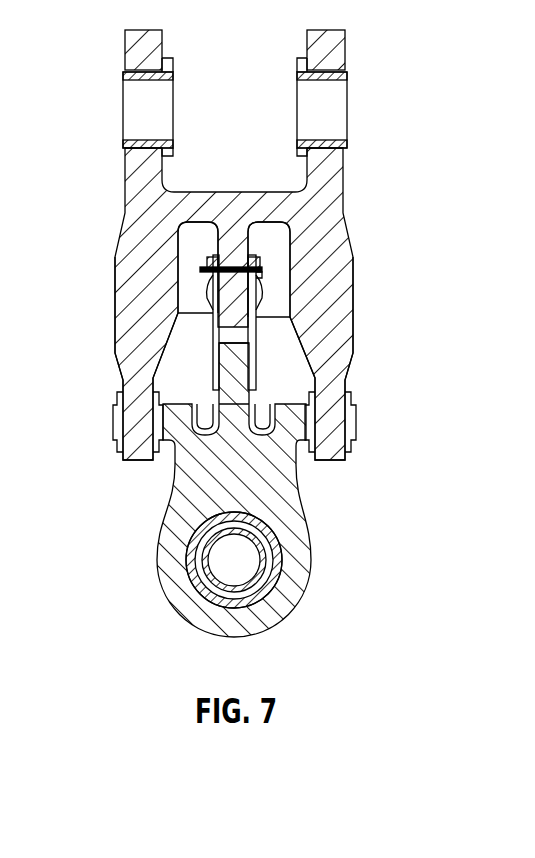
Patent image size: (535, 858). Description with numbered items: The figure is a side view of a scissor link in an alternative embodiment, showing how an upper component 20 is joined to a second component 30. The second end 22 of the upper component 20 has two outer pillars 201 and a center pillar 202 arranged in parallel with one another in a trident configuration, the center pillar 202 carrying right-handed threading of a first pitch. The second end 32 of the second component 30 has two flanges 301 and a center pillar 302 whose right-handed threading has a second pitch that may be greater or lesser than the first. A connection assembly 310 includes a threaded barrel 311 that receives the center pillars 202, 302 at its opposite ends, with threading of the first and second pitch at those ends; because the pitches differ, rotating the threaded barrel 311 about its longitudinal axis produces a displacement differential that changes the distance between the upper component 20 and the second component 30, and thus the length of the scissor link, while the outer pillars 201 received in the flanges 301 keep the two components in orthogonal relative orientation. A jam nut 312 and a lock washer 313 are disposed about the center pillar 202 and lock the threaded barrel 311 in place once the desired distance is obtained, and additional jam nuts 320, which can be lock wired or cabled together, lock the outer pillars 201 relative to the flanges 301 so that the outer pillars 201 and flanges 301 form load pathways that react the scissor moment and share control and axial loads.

The upper component 20 is at (125, 50).
The second end 22 is at (123, 298).
The outer pillars 201 is at (130, 340).
The center pillar 202 is at (225, 252).
The connection assembly 310 is at (200, 270).
The threaded barrel 311 is at (213, 313).
The jam nut 312 is at (258, 262).
The lock washer 313 is at (263, 272).
The additional jam nuts 320 is at (350, 443).
The flanges 301 is at (117, 425).
The second component 30 is at (157, 560).
The second end 32 is at (183, 468).
The center pillar 302 is at (237, 407).